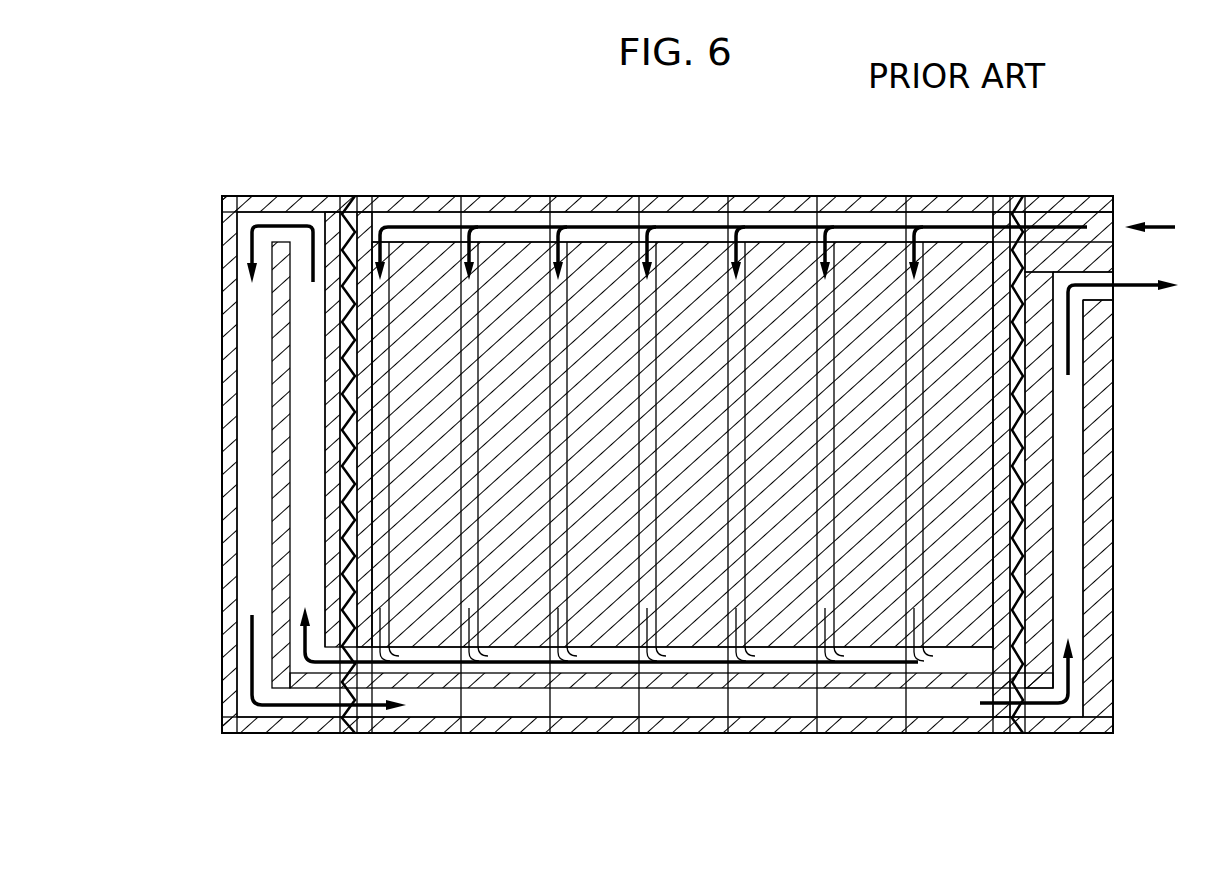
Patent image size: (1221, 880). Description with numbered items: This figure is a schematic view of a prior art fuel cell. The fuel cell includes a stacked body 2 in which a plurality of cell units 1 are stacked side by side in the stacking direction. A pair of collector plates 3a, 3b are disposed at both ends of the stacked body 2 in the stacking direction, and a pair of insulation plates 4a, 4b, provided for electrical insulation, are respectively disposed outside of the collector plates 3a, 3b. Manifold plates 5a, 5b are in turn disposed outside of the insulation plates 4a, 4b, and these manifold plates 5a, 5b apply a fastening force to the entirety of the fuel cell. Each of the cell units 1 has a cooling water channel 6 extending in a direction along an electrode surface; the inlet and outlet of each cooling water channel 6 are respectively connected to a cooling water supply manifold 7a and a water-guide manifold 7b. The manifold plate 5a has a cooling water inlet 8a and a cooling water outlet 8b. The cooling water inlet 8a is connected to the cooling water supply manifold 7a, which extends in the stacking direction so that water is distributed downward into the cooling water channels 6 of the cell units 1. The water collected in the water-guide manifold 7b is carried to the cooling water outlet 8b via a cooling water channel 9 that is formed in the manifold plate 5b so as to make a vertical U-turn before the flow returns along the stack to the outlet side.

The cell unit 1 is at (842, 197).
The stacked body 2 is at (606, 176).
The collector plate 3a is at (1005, 733).
The collector plate 3b is at (360, 733).
The insulation plate 4a is at (1020, 733).
The insulation plate 4b is at (348, 733).
The manifold plate 5a is at (1105, 546).
The manifold plate 5b is at (232, 467).
The cooling water channel 6 is at (553, 350).
The cooling water supply manifold 7a is at (679, 226).
The water-guide manifold 7b is at (690, 690).
The cooling water inlet 8a is at (1105, 237).
The cooling water outlet 8b is at (1110, 297).
The cooling water channel 9 is at (250, 408).